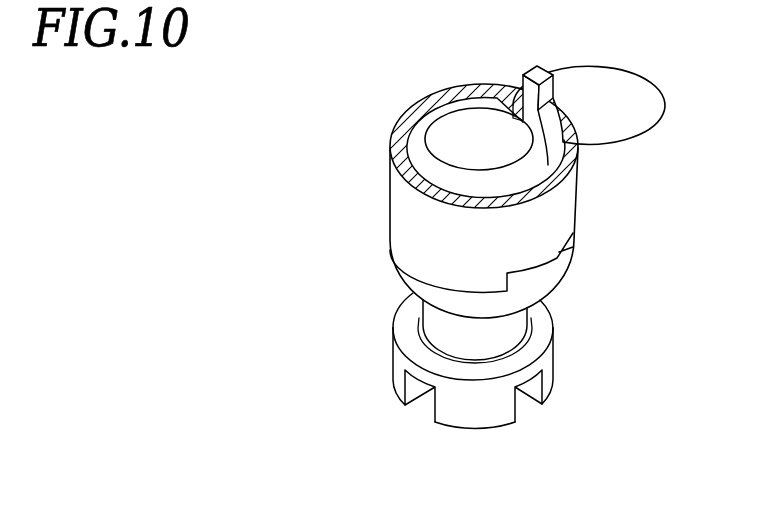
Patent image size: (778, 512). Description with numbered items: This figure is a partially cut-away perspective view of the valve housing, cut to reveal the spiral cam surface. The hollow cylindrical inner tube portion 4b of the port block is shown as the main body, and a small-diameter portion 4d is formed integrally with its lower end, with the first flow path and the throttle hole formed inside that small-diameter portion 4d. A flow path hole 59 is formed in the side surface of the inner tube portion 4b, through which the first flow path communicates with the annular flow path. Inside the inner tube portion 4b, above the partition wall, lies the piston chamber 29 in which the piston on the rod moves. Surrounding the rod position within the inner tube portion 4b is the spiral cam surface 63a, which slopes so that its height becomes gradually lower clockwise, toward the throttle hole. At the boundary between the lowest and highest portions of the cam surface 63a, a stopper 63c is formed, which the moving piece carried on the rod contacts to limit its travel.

The piston chamber 29 is at (460, 130).
The spiral cam surface 63a is at (415, 138).
The stopper 63c is at (545, 76).
The inner tube portion 4b is at (403, 222).
The flow path hole 59 is at (533, 270).
The small-diameter portion 4d is at (447, 330).